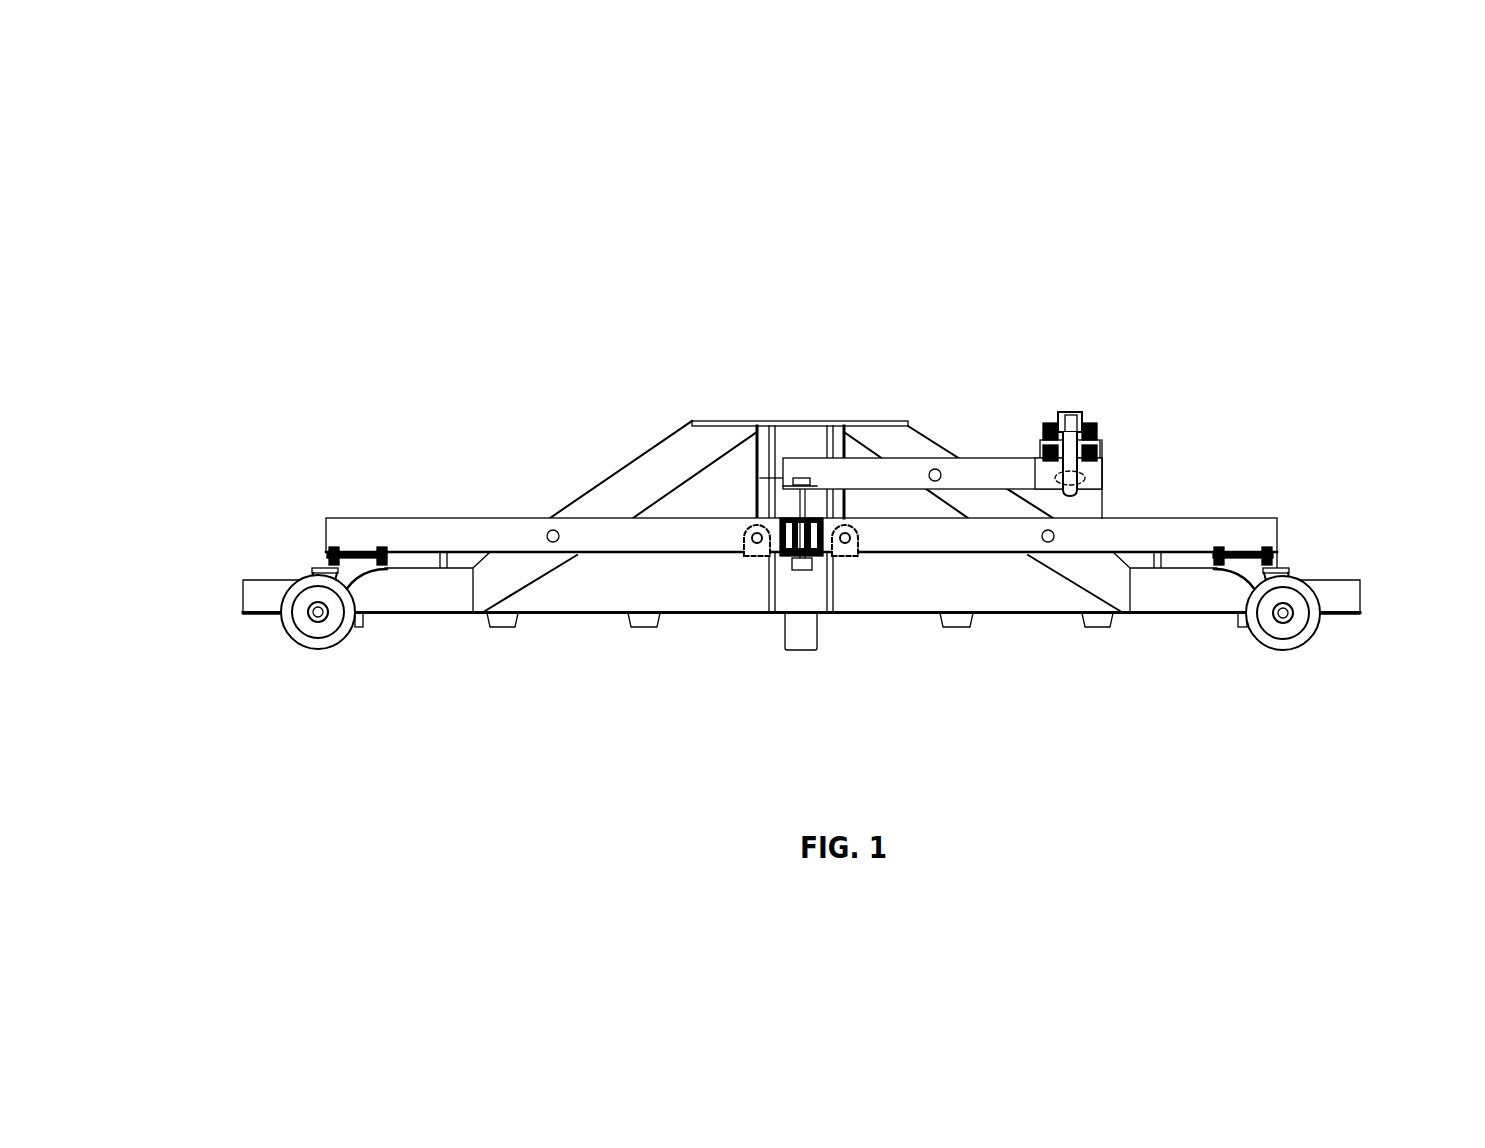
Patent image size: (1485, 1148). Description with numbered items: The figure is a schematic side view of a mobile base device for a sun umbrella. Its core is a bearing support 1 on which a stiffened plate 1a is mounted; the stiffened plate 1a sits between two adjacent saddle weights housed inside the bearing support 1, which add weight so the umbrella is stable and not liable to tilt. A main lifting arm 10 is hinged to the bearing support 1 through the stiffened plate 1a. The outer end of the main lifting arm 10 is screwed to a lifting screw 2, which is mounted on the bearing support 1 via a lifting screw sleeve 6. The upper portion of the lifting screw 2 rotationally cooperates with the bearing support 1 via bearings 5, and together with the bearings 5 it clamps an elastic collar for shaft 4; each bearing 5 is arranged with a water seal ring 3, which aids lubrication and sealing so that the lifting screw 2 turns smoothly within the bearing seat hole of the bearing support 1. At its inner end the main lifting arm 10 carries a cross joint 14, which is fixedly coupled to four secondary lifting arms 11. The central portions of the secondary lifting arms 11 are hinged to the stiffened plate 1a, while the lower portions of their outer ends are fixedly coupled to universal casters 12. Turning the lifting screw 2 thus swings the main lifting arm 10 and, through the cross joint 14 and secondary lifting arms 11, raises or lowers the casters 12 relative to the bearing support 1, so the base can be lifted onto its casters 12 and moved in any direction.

The bearing support 1 is at (257, 607).
The stiffened plate 1a is at (610, 497).
The lifting screw 2 is at (1077, 412).
The water seal ring 3 is at (1052, 420).
The elastic collar for shaft 4 is at (1043, 432).
The bearing 5 is at (997, 458).
The lifting screw sleeve 6 is at (1055, 478).
The main lifting arm 10 is at (1097, 478).
The secondary lifting arm 11 is at (1253, 534).
The caster 12 is at (1293, 605).
The cross joint 14 is at (845, 557).